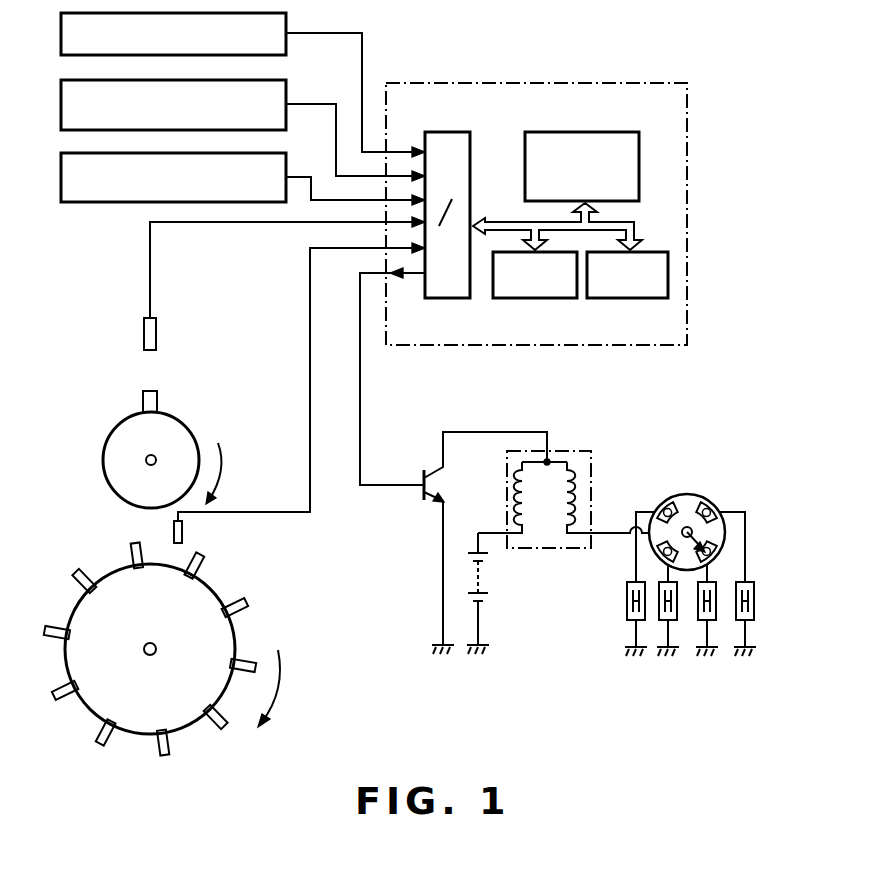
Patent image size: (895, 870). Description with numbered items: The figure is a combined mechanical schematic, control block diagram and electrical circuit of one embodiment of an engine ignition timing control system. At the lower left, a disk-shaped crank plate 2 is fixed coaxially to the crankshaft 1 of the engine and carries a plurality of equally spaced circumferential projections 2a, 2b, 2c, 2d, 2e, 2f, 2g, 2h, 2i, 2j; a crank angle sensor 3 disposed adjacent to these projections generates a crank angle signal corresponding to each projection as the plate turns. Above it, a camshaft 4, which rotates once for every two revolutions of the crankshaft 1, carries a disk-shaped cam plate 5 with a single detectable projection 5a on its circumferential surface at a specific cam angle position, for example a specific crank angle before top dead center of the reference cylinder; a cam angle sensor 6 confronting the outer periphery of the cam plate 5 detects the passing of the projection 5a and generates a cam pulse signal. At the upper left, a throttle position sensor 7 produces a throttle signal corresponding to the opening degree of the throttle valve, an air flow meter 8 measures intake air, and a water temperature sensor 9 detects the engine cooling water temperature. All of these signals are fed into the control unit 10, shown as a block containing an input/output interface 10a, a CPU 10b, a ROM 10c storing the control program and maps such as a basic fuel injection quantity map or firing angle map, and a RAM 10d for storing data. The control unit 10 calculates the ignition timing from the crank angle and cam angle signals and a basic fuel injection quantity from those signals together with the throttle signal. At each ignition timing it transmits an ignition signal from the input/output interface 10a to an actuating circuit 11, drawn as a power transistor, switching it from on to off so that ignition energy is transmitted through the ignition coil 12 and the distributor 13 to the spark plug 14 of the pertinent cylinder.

The crankshaft 1 is at (143, 651).
The crank plate 2 is at (159, 657).
The projection 2a is at (201, 558).
The projection 2b is at (247, 604).
The projection 2c is at (256, 667).
The projection 2d is at (224, 727).
The projection 2e is at (166, 756).
The projection 2f is at (101, 745).
The projection 2g is at (55, 697).
The projection 2h is at (46, 629).
The projection 2i is at (77, 574).
The projection 2j is at (135, 545).
The crank angle sensor 3 is at (182, 532).
The camshaft 4 is at (146, 457).
The cam plate 5 is at (194, 440).
The projection 5a is at (157, 402).
The cam angle sensor 6 is at (156, 335).
The throttle position sensor 7 is at (61, 183).
The air flow meter 8 is at (61, 37).
The water temperature sensor 9 is at (61, 110).
The control unit 10 is at (625, 82).
The input/output interface 10a is at (472, 142).
The CPU 10b is at (628, 132).
The ROM 10c is at (530, 298).
The RAM 10d is at (617, 298).
The actuating circuit 11 is at (436, 484).
The ignition coil 12 is at (565, 451).
The distributor 13 is at (690, 494).
The spark plug 14 is at (755, 600).